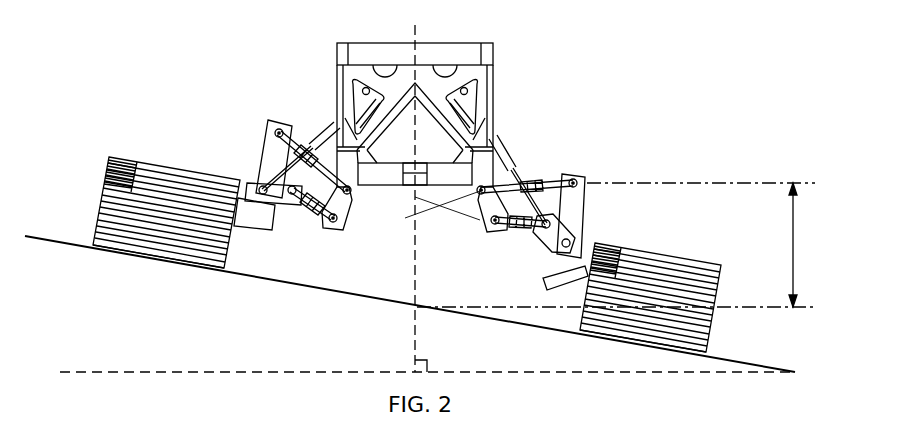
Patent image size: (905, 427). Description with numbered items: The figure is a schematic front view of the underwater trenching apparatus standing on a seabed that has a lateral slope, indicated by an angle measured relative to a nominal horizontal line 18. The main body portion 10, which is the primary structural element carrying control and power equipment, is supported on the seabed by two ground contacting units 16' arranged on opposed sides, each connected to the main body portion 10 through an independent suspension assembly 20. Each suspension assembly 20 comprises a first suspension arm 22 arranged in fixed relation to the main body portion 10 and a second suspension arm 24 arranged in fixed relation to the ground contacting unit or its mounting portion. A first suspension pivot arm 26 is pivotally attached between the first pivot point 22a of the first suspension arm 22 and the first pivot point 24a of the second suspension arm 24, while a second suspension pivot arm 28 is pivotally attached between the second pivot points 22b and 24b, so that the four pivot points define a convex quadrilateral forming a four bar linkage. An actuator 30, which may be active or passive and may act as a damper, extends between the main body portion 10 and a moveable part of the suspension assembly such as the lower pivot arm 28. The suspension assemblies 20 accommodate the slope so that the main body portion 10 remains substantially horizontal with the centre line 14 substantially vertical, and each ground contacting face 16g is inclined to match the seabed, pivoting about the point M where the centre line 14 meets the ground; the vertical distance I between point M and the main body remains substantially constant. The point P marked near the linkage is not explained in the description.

The main body portion 10 is at (473, 55).
The centre line 14 is at (419, 34).
The independent suspension assembly 20 is at (423, 188).
The second suspension arm 24 is at (258, 150).
The first pivot point of second suspension arm 24a is at (278, 128).
The second pivot point of second suspension arm 24b is at (247, 196).
The first suspension pivot arm 26 is at (304, 150).
The second suspension pivot arm 28 is at (317, 223).
The actuator 30 is at (366, 108).
The first suspension arm 22 is at (347, 222).
The first pivot point of first suspension arm 22a is at (351, 194).
The second pivot point of first suspension arm 22b is at (336, 228).
The ground contacting unit 16' is at (156, 190).
The ground contacting face or portion 16g is at (153, 262).
The nominal horizontal line 18 is at (200, 372).
The point P is at (413, 197).
The point of intersection M is at (412, 306).
The distance I is at (616, 245).